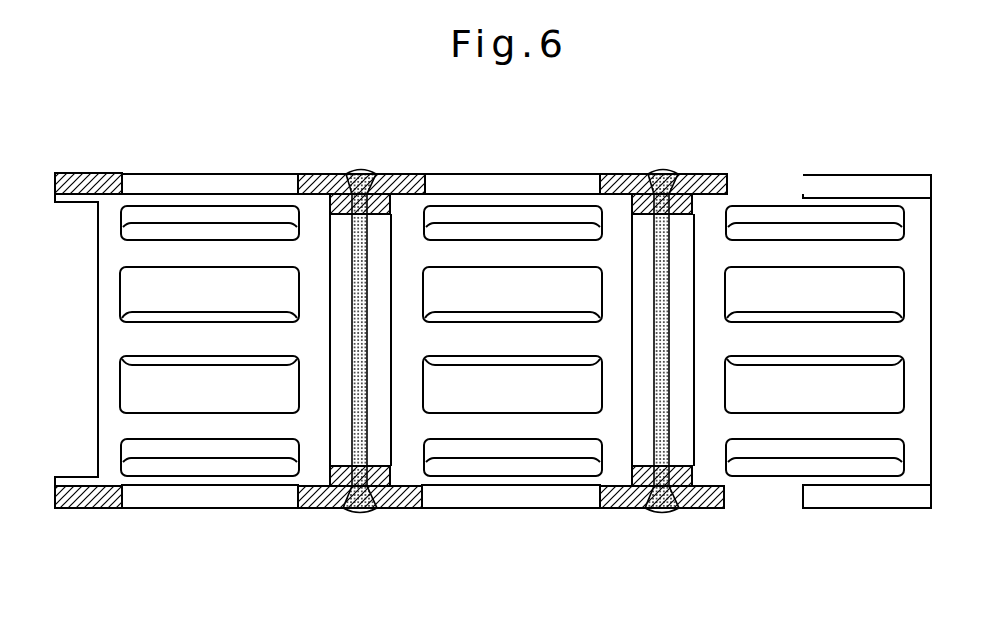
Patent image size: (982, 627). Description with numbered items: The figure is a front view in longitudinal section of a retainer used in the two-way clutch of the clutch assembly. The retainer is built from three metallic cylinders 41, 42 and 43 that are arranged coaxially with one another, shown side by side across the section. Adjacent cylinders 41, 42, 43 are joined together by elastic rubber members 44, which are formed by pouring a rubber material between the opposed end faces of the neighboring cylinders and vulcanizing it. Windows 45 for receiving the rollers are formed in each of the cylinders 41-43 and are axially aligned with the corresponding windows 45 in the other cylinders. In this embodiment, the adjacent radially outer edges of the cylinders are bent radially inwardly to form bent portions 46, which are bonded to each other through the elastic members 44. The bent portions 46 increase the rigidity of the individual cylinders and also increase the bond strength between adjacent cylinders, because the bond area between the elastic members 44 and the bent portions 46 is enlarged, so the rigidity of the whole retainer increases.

The metallic cylinder 41 is at (810, 160).
The metallic cylinder 42 is at (524, 160).
The metallic cylinder 43 is at (212, 160).
The elastic rubber member 44 is at (358, 513).
The window 45 is at (175, 500).
The bent portion 46 is at (385, 172).